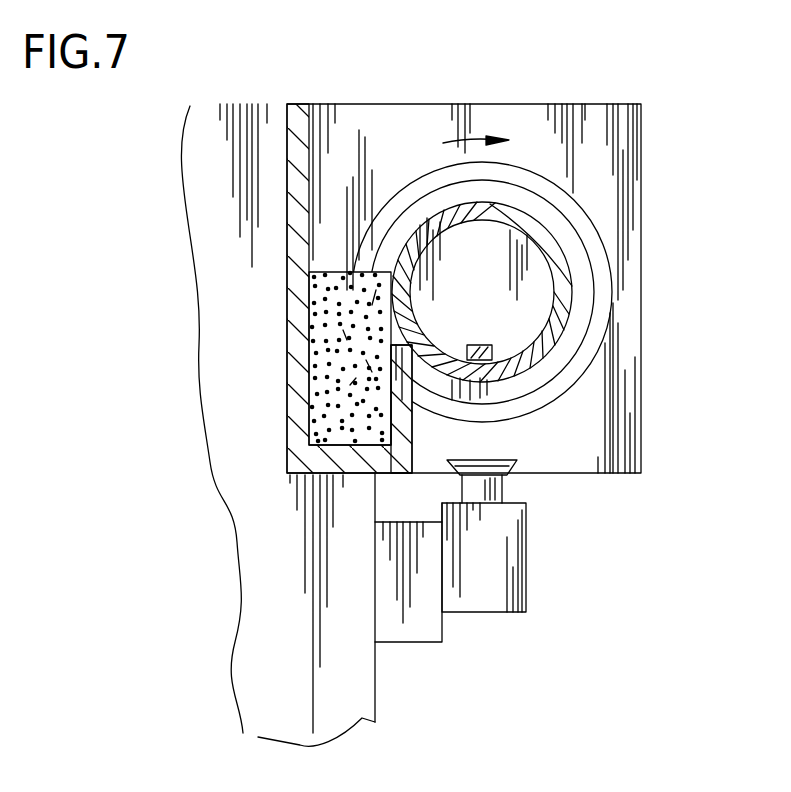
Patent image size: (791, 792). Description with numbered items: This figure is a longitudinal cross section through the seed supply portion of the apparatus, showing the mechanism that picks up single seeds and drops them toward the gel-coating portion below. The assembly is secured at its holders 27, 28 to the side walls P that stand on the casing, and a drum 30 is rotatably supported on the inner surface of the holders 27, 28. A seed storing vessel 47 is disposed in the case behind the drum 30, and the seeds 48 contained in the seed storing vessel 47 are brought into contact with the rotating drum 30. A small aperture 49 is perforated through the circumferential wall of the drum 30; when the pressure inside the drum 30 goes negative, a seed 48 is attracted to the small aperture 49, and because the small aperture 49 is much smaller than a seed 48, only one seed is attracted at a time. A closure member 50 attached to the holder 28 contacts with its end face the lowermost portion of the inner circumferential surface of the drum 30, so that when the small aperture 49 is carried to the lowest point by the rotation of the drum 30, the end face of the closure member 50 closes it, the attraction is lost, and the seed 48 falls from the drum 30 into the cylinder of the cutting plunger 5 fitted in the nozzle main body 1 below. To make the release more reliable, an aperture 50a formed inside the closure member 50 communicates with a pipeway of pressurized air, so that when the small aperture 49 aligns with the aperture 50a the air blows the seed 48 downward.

The holder 27 is at (583, 207).
The holder 28 is at (482, 292).
The drum 30 is at (568, 284).
The closure member 50 is at (513, 380).
The aperture 50a is at (483, 345).
The seed storing vessel 47 is at (318, 365).
The seeds 48 is at (337, 322).
The small aperture 49 is at (392, 295).
The cutting plunger 5 is at (500, 488).
The nozzle main body 1 is at (526, 578).
The side wall P is at (641, 222).